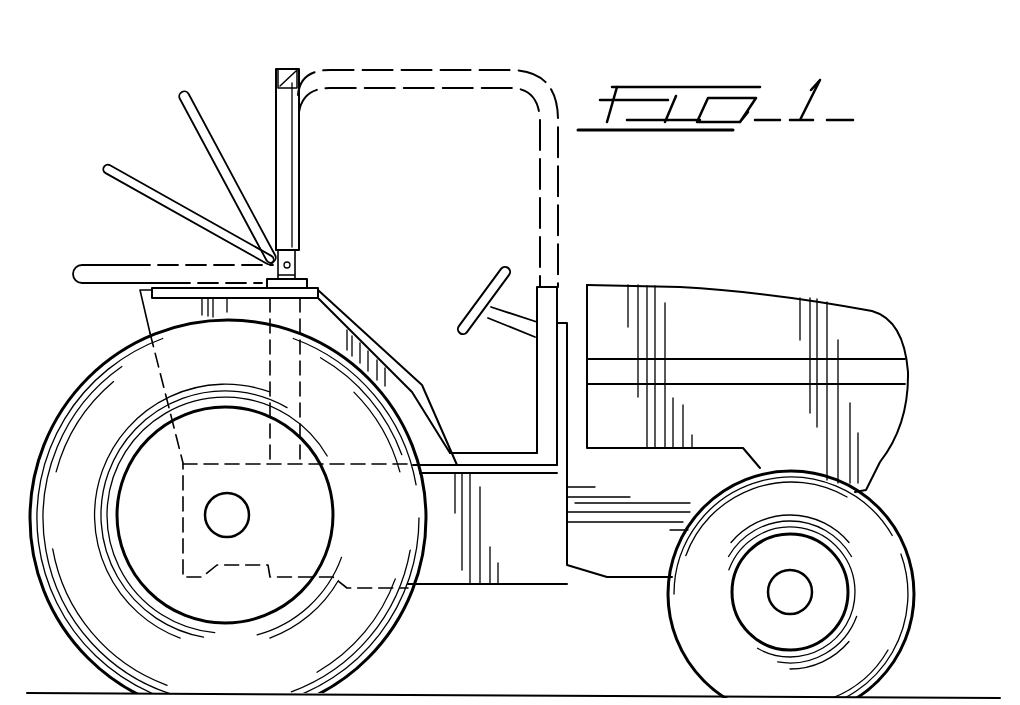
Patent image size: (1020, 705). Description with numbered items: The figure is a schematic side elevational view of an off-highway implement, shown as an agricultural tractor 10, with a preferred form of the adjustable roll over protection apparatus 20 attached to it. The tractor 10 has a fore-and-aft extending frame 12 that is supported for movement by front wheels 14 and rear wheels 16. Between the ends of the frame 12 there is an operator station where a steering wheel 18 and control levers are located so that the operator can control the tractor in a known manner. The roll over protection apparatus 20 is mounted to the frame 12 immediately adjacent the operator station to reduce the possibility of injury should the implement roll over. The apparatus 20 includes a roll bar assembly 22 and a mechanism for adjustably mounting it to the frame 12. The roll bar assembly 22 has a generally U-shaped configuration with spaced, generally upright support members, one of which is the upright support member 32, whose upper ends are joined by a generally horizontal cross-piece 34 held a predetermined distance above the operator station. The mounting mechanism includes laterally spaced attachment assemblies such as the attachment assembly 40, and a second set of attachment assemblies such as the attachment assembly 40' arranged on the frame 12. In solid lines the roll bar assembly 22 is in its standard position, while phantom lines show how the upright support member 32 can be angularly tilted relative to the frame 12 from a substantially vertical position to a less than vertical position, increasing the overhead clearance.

The agricultural tractor 10 is at (743, 276).
The frame 12 is at (523, 548).
The front wheels 14 is at (703, 634).
The rear wheels 16 is at (350, 626).
The steering wheel 18 is at (478, 304).
The roll over protection apparatus 20 is at (304, 208).
The roll bar assembly 22 is at (275, 117).
The upright support member 32 is at (292, 140).
The cross-piece 34 is at (302, 65).
The attachment assembly 40 is at (317, 355).
The attachment assembly 40' is at (577, 349).